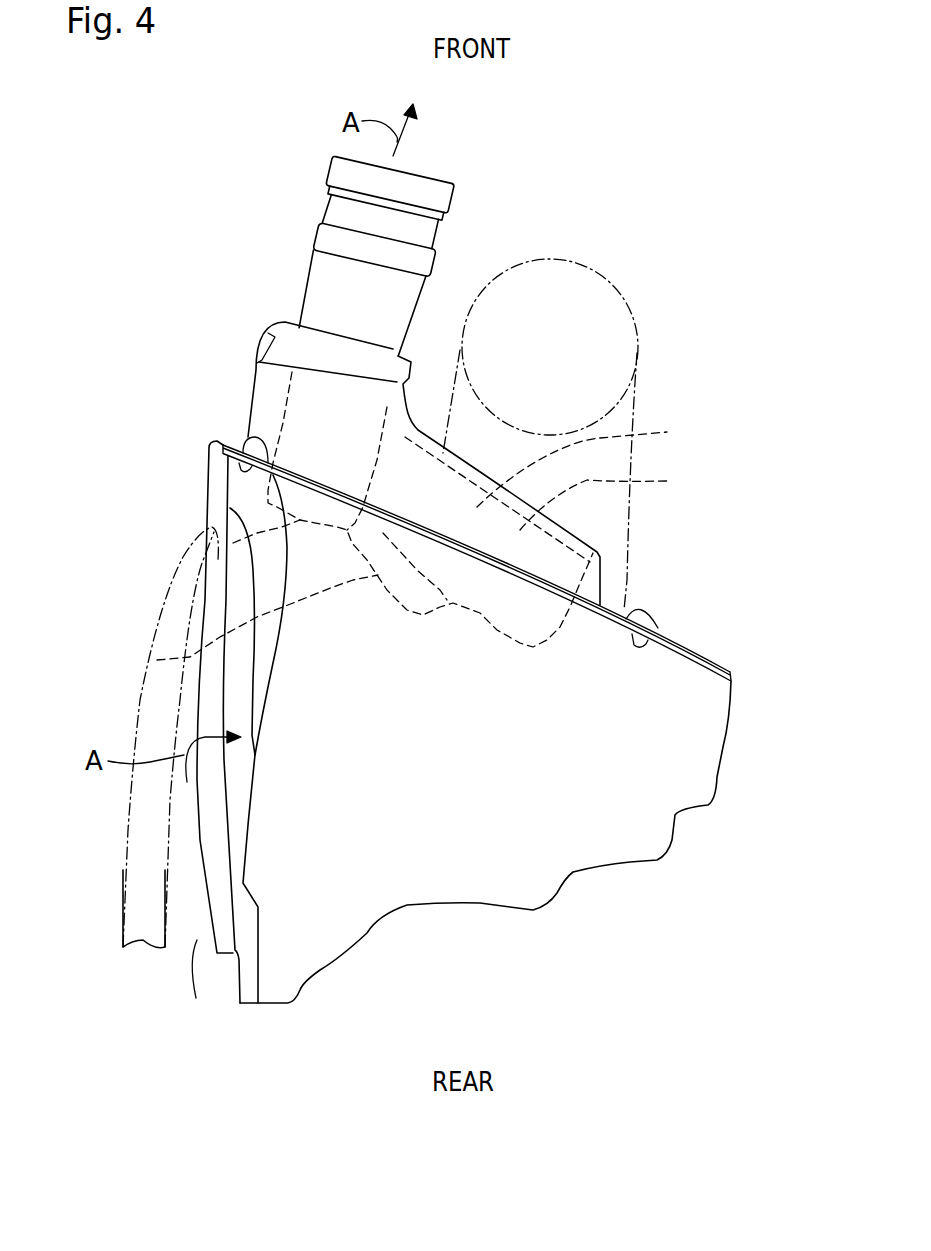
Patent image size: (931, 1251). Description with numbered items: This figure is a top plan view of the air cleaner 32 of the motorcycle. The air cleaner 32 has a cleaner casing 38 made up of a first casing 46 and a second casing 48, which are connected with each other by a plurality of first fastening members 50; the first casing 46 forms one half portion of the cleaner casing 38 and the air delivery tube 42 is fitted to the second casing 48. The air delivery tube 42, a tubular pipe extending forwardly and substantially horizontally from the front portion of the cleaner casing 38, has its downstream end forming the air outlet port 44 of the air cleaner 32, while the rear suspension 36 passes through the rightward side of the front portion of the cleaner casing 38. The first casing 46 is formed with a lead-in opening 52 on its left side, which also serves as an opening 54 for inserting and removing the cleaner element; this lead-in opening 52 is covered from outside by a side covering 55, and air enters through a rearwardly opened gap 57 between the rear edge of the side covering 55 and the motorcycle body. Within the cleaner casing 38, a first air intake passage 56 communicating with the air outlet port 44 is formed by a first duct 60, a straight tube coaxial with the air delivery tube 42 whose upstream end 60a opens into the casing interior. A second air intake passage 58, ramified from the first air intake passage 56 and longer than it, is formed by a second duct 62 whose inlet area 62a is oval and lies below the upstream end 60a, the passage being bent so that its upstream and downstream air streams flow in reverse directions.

The air cleaner 32 is at (583, 943).
The rear suspension 36 is at (632, 314).
The cleaner casing 38 is at (501, 679).
The air delivery tube 42 is at (438, 246).
The air outlet port 44 is at (427, 170).
The first casing 46 is at (712, 797).
The second casing 48 is at (610, 555).
The first fastening members 50 is at (250, 440).
The lead-in opening 52 is at (143, 722).
The opening 54 is at (227, 777).
The side covering 55 is at (123, 918).
The first air intake passage 56 is at (323, 390).
The gap 57 is at (194, 987).
The second air intake passage 58 is at (589, 464).
The first duct 60 is at (290, 402).
The upstream end of first duct 60a is at (212, 557).
The second duct 62 is at (429, 564).
The inlet area of second duct 62a is at (157, 660).